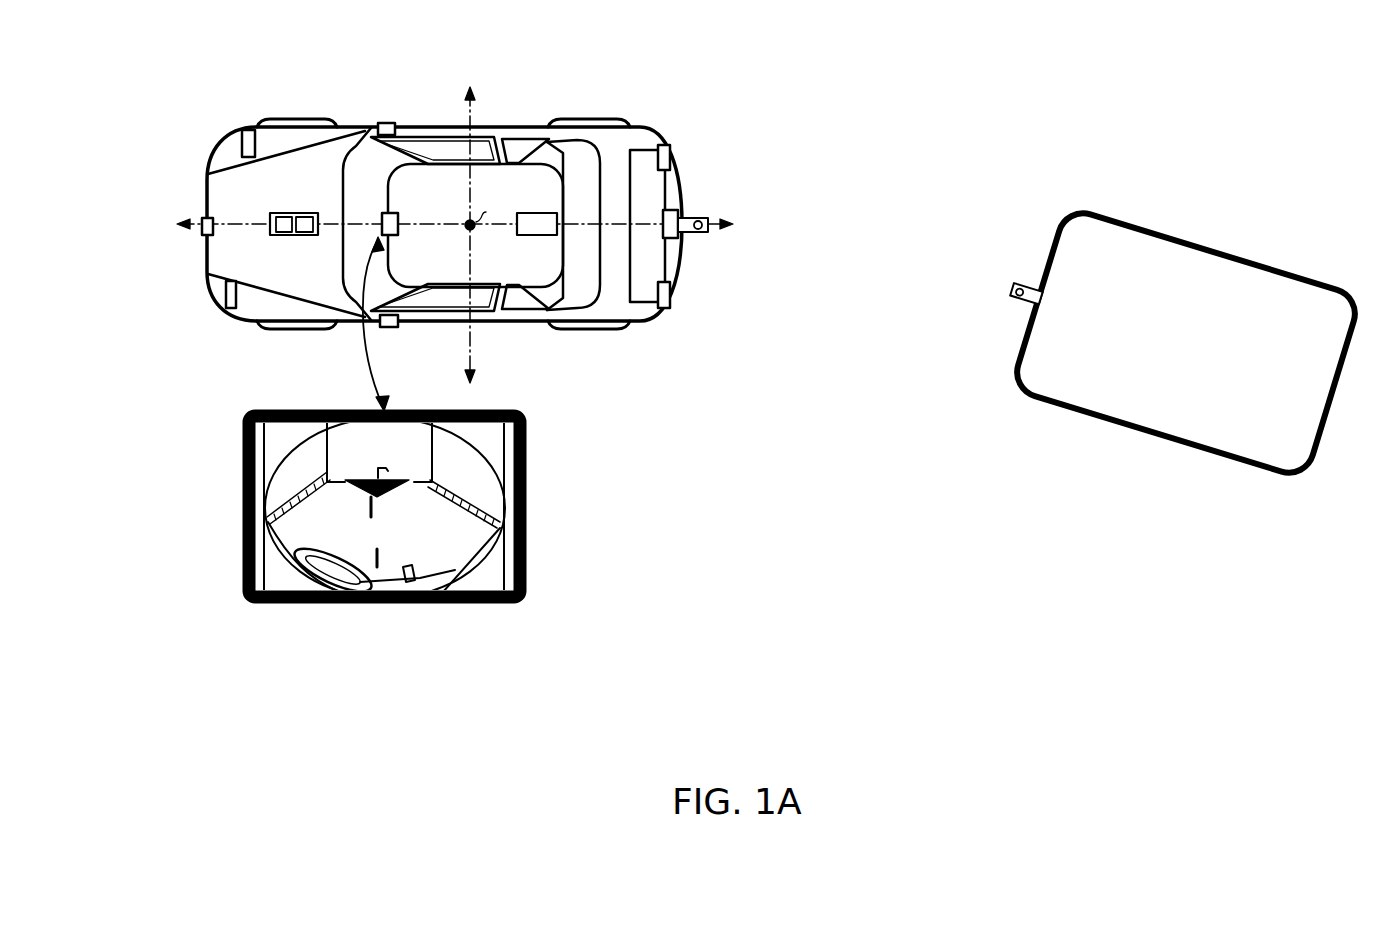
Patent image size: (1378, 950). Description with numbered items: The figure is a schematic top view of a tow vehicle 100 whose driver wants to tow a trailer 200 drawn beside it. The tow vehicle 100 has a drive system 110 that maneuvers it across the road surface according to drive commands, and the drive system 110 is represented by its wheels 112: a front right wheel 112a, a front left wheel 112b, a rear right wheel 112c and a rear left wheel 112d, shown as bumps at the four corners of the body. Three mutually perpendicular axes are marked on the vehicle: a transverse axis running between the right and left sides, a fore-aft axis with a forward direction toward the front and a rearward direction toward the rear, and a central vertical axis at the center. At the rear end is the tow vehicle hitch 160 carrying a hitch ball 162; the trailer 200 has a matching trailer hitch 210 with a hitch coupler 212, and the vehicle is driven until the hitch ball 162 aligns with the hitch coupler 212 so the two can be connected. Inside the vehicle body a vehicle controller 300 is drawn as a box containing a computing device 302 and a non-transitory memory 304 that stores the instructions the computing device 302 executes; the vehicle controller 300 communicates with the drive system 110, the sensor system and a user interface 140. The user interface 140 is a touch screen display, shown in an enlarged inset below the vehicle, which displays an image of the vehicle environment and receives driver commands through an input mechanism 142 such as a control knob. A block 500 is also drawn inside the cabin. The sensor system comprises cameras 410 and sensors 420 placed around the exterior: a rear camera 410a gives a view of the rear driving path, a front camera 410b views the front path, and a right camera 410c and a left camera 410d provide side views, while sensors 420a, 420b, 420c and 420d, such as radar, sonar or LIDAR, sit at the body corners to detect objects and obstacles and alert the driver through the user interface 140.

The tow vehicle 100 is at (236, 117).
The drive system 110 is at (441, 225).
The wheel 112 is at (441, 225).
The front right wheel 112a is at (297, 118).
The front left wheel 112b is at (300, 331).
The rear right wheel 112c is at (589, 118).
The rear left wheel 112d is at (598, 331).
The user interface 140 is at (428, 395).
The input mechanism 142 is at (500, 497).
The tow vehicle hitch 160 is at (717, 196).
The hitch ball 162 is at (703, 222).
The trailer 200 is at (1167, 354).
The trailer hitch 210 is at (1009, 261).
The hitch coupler 212 is at (997, 269).
The vehicle controller 300 is at (290, 223).
The computing device 302 is at (282, 236).
The non-transitory memory 304 is at (305, 236).
The camera 410 is at (437, 223).
The rear camera 410a is at (680, 238).
The front camera 410b is at (203, 217).
The right camera 410c is at (402, 105).
The left camera 410d is at (391, 328).
The sensor 420 is at (438, 223).
The sensor 420a is at (671, 296).
The sensor 420b is at (241, 141).
The sensor 420c is at (671, 152).
The sensor 420d is at (225, 292).
The controller 500 is at (538, 236).